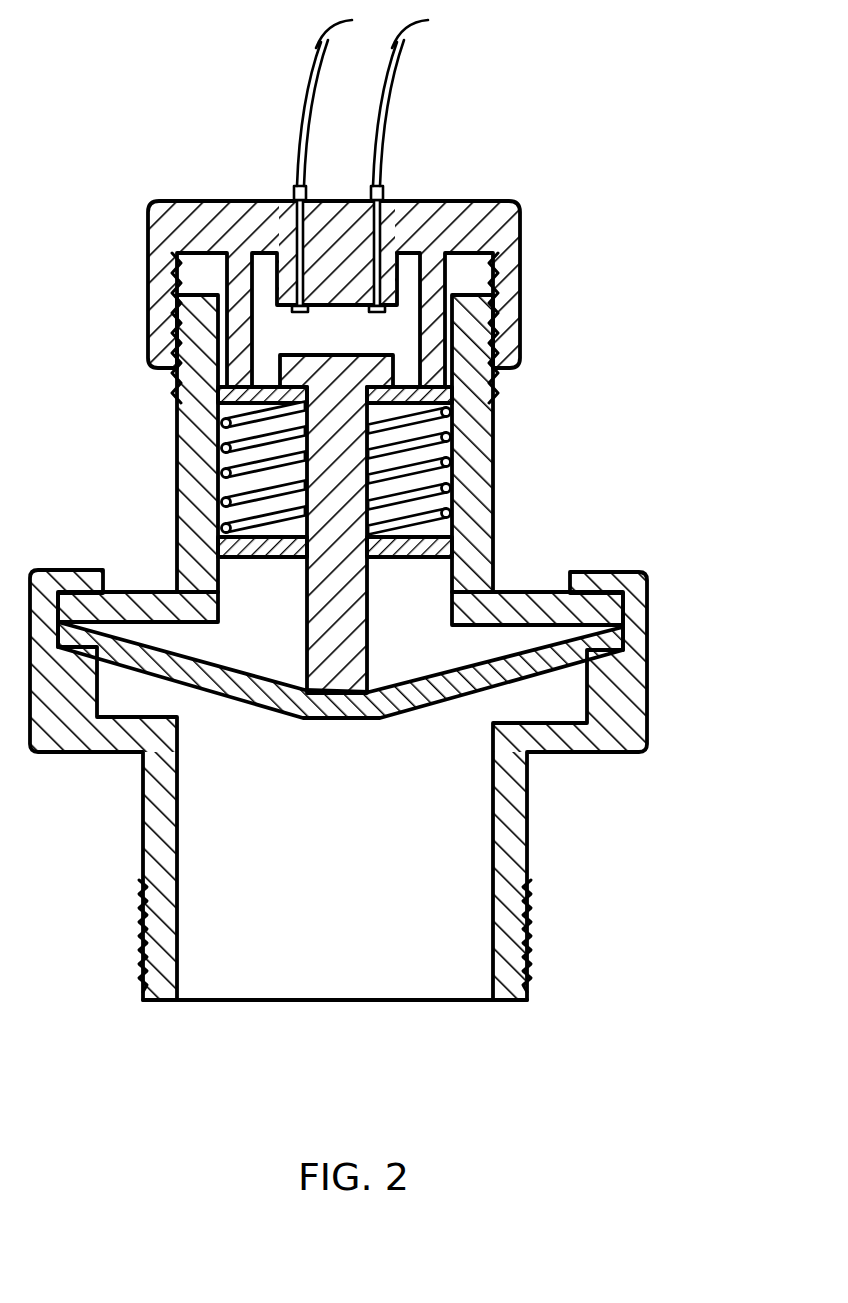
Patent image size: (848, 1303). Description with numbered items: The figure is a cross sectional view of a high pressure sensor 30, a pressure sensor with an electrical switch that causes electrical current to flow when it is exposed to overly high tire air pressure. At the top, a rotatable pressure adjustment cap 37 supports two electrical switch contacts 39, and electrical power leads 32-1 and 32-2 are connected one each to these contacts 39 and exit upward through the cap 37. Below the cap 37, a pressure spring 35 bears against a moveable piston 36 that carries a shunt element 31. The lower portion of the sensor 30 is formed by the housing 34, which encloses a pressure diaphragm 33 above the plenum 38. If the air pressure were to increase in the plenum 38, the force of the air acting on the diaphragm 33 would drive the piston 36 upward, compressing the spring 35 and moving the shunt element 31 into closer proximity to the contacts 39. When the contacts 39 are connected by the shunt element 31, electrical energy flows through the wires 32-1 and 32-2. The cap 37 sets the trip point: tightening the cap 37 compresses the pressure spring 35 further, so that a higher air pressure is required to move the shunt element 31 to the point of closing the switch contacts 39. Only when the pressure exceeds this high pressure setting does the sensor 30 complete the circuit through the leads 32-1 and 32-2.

The high pressure sensor 30 is at (538, 800).
The shunt element 31 is at (447, 380).
The electrical power lead 32-1 is at (380, 97).
The electrical power lead 32-2 is at (305, 97).
The pressure diaphragm 33 is at (500, 684).
The housing 34 is at (495, 545).
The pressure spring 35 is at (450, 487).
The piston 36 is at (315, 635).
The rotatable pressure adjustment cap 37 is at (522, 243).
The plenum 38 is at (312, 908).
The electrical switch contacts 39 is at (293, 312).